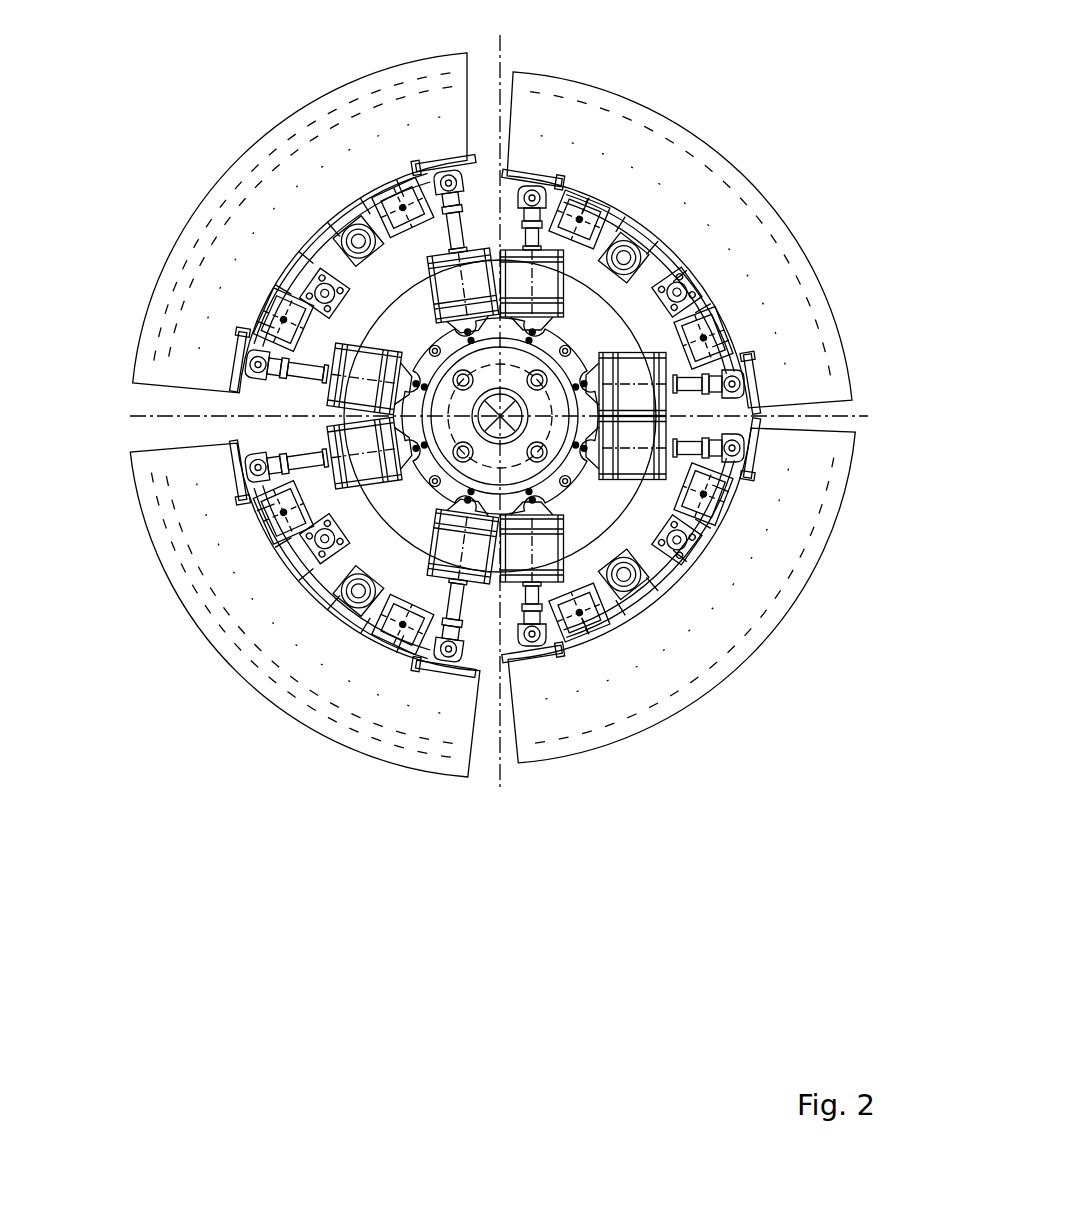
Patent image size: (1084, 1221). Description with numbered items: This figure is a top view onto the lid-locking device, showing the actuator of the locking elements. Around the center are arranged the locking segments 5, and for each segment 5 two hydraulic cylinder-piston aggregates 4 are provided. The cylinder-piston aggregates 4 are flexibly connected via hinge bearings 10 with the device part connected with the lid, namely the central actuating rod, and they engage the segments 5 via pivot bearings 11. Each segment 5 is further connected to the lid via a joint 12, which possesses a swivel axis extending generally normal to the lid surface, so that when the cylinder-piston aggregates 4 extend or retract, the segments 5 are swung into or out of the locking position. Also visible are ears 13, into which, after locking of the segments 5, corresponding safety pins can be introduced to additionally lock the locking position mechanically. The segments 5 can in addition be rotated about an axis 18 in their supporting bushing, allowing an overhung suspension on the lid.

The hydraulic cylinder-piston aggregate 4 is at (543, 283).
The locking segment 5 is at (248, 190).
The hinge bearing 10 is at (607, 253).
The pivot bearing 11 is at (539, 178).
The joint 12 is at (697, 252).
The ear 13 is at (398, 180).
The axis 18 is at (688, 242).